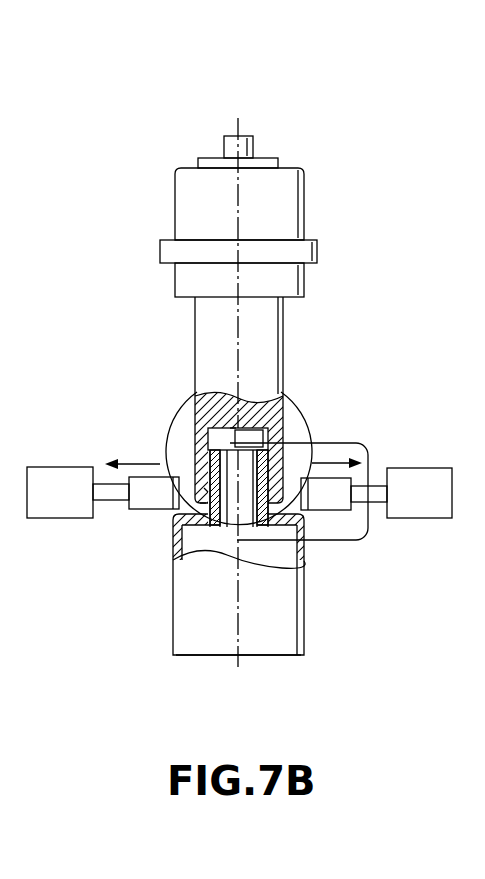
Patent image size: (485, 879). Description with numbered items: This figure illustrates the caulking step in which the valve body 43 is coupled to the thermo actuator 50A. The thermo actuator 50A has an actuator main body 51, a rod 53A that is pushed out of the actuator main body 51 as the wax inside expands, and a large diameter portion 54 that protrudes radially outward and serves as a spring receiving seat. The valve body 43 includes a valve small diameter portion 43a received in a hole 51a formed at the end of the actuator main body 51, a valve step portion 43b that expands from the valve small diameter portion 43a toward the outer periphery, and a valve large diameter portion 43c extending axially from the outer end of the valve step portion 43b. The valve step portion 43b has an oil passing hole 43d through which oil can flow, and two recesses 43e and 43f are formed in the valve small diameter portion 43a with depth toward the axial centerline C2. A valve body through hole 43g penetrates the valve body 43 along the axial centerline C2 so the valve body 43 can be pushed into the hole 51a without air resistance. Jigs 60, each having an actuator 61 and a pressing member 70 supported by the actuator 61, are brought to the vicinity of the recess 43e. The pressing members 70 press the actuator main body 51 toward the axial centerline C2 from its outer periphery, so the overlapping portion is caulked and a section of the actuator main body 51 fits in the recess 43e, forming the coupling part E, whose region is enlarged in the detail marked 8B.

The axial centerline C2 is at (236, 127).
The thermo actuator 50A is at (175, 163).
The rod 53A is at (242, 135).
The large diameter portion 54 is at (160, 249).
The actuator main body 51 is at (283, 328).
The hole 51a is at (238, 438).
The valve body 43 is at (173, 628).
The valve small diameter portion 43a is at (270, 455).
The valve step portion 43b is at (226, 524).
The valve large diameter portion 43c is at (252, 628).
The oil passing hole 43d is at (267, 524).
The recess 43e is at (204, 502).
The recess 43f is at (207, 490).
The valve body through hole 43g is at (232, 430).
The coupling part E is at (303, 458).
The region shown in FIG. 8B is at (368, 445).
The jigs 60 is at (130, 555).
The actuator 61 is at (63, 520).
The pressing member 70 is at (148, 510).